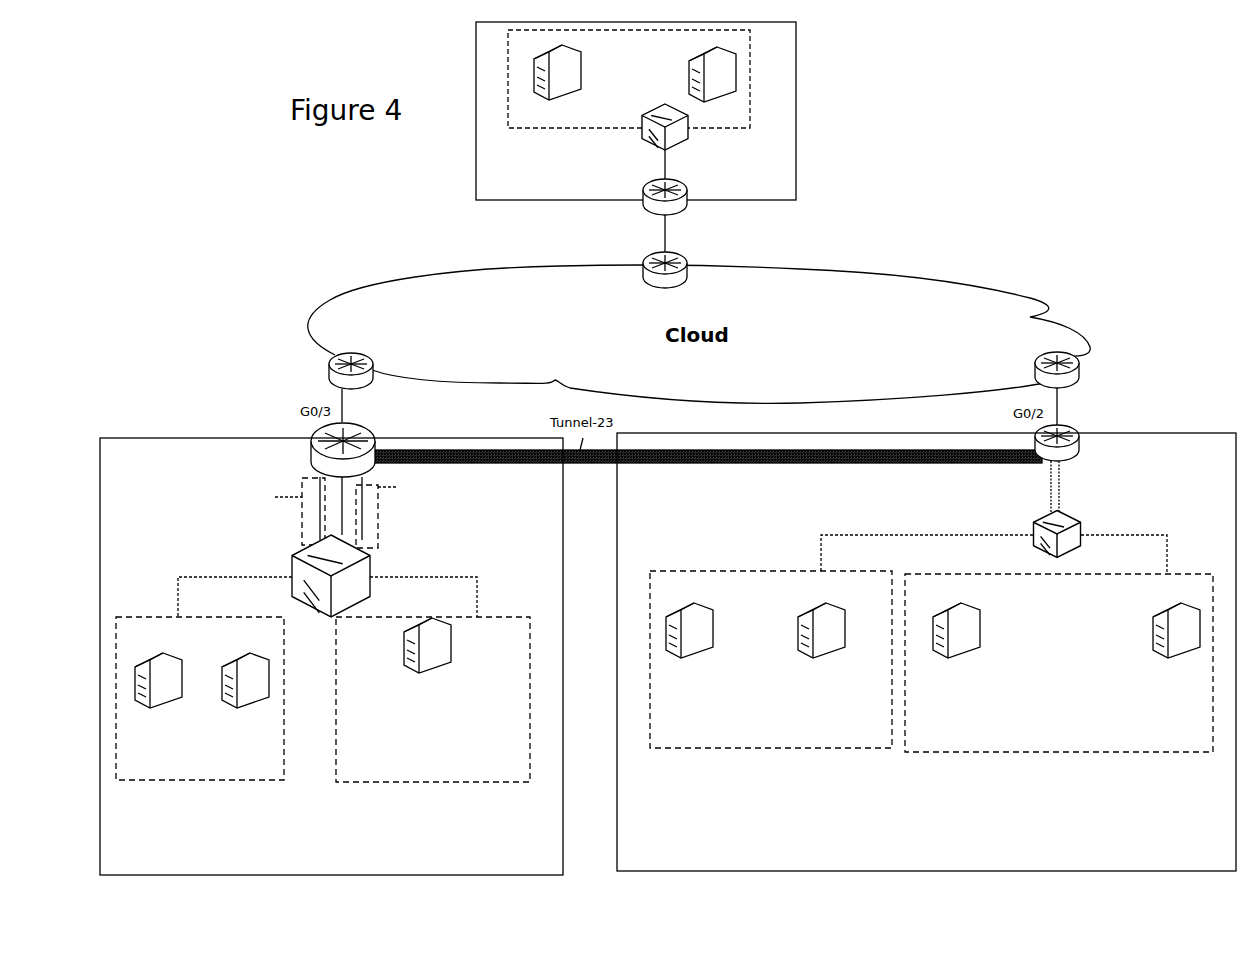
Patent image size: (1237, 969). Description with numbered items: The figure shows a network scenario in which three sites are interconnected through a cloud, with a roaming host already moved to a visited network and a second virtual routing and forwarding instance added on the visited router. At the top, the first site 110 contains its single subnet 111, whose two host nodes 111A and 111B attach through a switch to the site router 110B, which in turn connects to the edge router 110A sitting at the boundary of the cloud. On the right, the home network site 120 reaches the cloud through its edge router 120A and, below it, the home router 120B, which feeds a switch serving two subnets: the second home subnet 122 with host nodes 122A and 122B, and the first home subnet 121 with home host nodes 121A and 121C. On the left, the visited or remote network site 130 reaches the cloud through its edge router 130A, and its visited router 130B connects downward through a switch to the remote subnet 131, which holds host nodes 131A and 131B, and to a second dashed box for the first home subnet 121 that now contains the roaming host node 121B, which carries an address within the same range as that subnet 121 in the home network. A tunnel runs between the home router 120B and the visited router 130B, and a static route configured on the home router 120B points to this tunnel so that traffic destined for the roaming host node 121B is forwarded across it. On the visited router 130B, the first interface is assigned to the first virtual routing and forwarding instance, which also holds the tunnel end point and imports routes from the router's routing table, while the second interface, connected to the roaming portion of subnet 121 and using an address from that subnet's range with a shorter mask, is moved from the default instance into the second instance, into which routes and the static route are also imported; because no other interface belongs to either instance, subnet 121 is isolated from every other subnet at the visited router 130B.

The Site-1 110 is at (797, 147).
The router R-1 110A is at (683, 255).
The router R-100 110B is at (647, 183).
The Subnet-1 111 is at (738, 108).
The host node 111A is at (557, 65).
The host node 111B is at (712, 66).
The Site-2 120 is at (926, 652).
The router R-2 120A is at (1077, 360).
The router R-200 120B is at (1078, 426).
The Subnet-2A 121 is at (774, 678).
The host node 121A is at (956, 641).
The roaming host node 121B is at (426, 665).
The host node 121C is at (1176, 641).
The Subnet-2B 122 is at (771, 659).
The host node 122A is at (689, 641).
The host node 122B is at (821, 641).
The Site-3 130 is at (331, 656).
The router R-3 130A is at (367, 362).
The router R-300 130B is at (368, 421).
The Subnet-3 131 is at (200, 698).
The host node 131A is at (158, 692).
The host node 131B is at (245, 692).